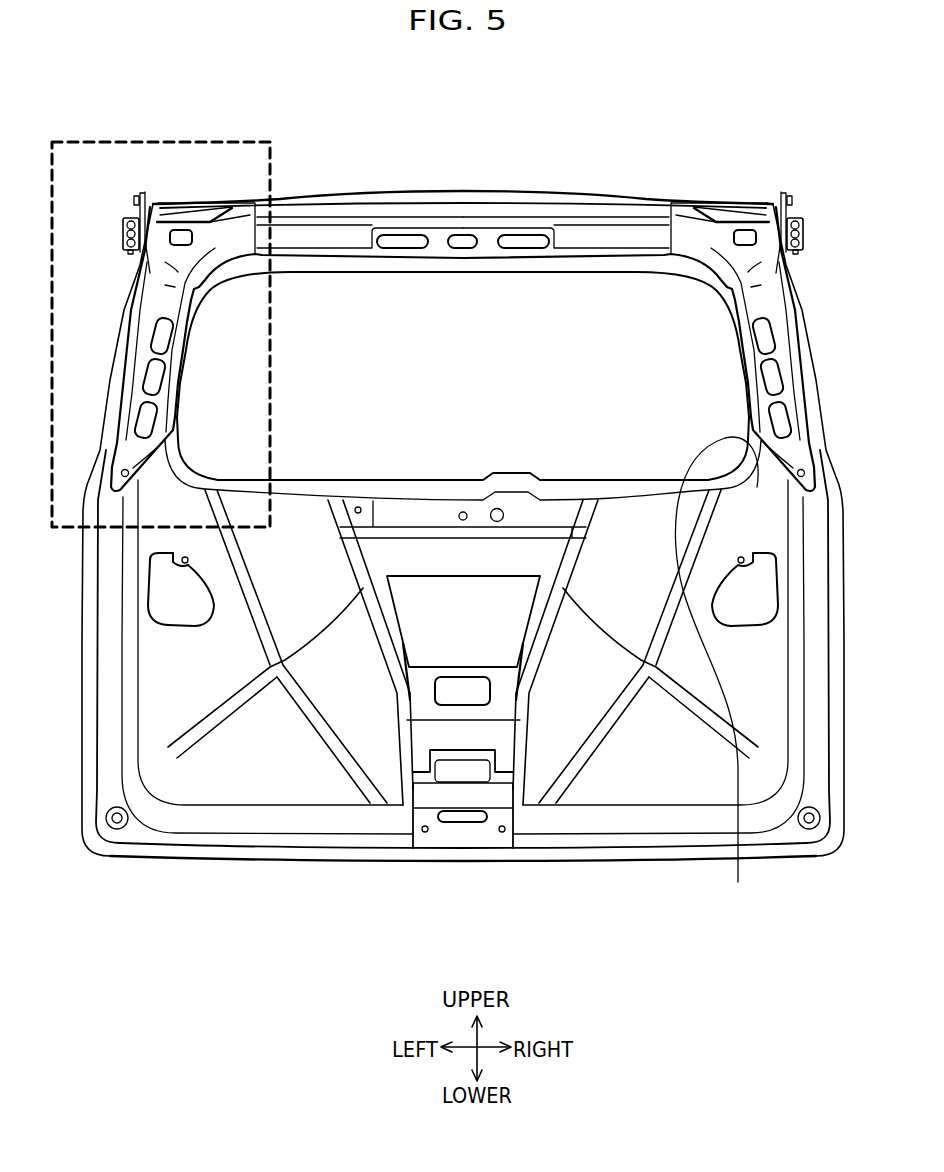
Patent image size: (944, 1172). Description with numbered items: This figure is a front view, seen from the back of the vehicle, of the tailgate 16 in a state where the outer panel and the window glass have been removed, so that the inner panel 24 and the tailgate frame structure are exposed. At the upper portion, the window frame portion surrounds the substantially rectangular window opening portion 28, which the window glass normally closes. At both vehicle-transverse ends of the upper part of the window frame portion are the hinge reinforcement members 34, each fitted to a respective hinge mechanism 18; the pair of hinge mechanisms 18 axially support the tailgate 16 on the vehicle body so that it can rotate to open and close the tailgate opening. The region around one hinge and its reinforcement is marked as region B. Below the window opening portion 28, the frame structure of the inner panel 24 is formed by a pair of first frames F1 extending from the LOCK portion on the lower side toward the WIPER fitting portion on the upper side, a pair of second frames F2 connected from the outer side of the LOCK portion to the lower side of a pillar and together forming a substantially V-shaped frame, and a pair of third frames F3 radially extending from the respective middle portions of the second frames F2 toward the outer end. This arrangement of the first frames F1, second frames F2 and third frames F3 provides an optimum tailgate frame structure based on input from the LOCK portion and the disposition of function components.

The tailgate 16 is at (457, 170).
The hinge mechanism 18 is at (130, 198).
The hinge reinforcement member 34 is at (140, 335).
The inner panel 24 is at (461, 870).
The window opening portion 28 is at (716, 671).
The first frame F1 is at (388, 672).
The second frame F2 is at (258, 597).
The third frame F3 is at (212, 740).
The region B (enlarged view) B is at (172, 140).